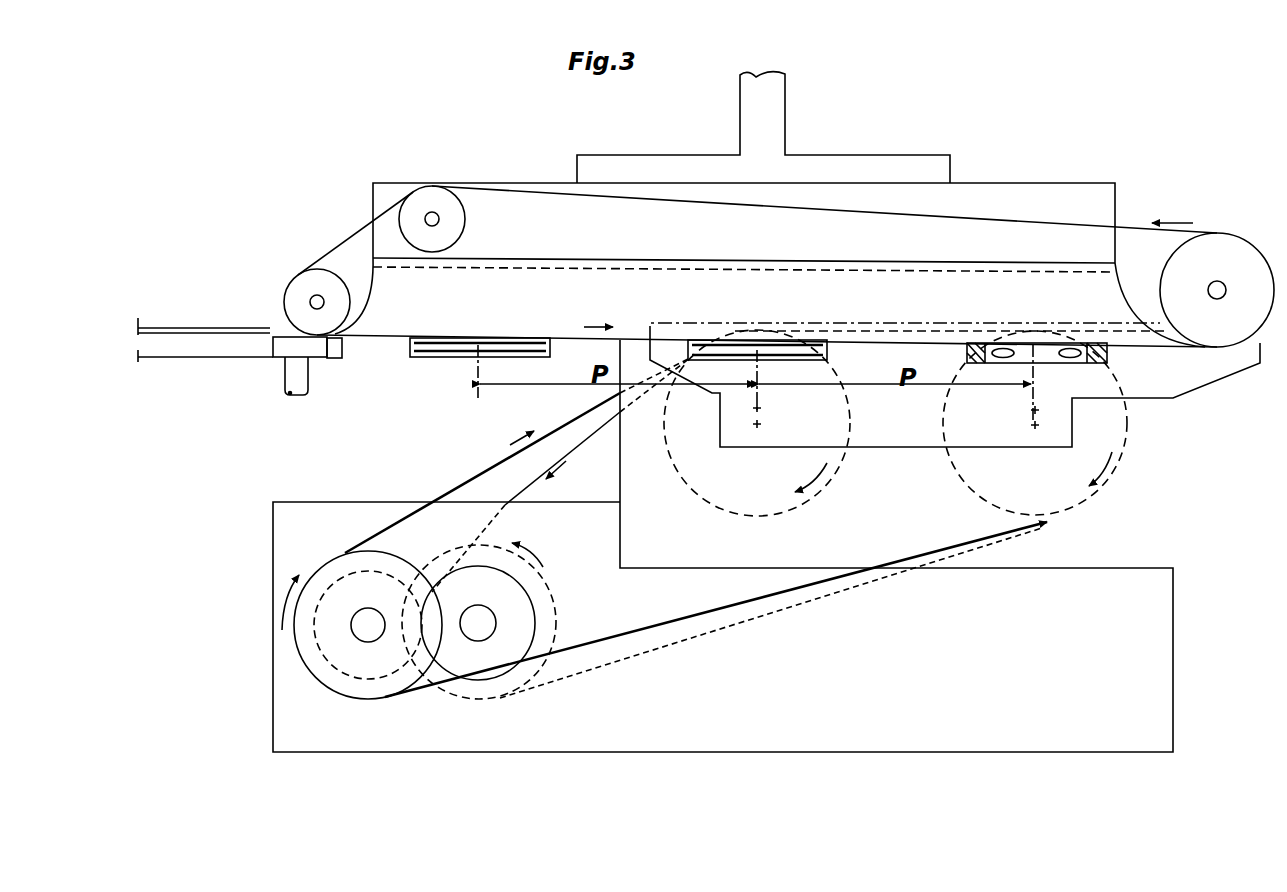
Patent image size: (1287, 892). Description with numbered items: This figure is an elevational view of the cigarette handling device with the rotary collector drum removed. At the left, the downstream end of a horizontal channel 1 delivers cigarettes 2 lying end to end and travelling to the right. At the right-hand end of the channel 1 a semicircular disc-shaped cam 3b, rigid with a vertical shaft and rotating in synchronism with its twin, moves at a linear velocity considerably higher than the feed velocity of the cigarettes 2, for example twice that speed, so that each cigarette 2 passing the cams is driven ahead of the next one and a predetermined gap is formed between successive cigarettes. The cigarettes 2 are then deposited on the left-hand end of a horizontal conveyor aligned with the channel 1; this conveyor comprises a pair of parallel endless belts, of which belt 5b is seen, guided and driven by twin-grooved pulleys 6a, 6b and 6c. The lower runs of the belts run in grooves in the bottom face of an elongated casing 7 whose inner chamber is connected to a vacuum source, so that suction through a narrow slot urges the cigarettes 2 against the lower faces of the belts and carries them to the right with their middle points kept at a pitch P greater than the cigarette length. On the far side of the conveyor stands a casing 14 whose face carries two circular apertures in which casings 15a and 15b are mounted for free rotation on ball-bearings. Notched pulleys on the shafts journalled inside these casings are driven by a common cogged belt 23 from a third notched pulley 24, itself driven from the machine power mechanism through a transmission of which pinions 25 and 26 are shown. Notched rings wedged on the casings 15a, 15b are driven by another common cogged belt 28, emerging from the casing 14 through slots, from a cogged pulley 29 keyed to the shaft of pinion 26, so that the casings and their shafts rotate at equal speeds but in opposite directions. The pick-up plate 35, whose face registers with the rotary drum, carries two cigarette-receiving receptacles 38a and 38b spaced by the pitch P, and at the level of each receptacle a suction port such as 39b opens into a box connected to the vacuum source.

The horizontal channel 1 is at (220, 350).
The cigarettes 2 is at (456, 351).
The disc-shaped cam 3b is at (312, 350).
The endless belt 5b is at (1099, 227).
The twin-grooved pulley 6a is at (293, 308).
The twin-grooved pulley 6b is at (433, 203).
The twin-grooved pulley 6c is at (1245, 273).
The elongated casing 7 is at (1112, 318).
The casing 14 is at (1090, 570).
The rotatable casing 15a is at (851, 421).
The rotatable casing 15b is at (943, 414).
The cogged belt 23 is at (523, 493).
The notched pulley 24 is at (493, 700).
The pinion 25 is at (528, 600).
The pinion 26 is at (391, 576).
The cogged belt 28 is at (460, 487).
The cogged pulley 29 is at (383, 697).
The pick-up plate 35 is at (1055, 442).
The cigarette-receiving receptacle 38a is at (787, 362).
The cigarette-receiving receptacle 38b is at (1036, 342).
The suction port 39b is at (1072, 350).